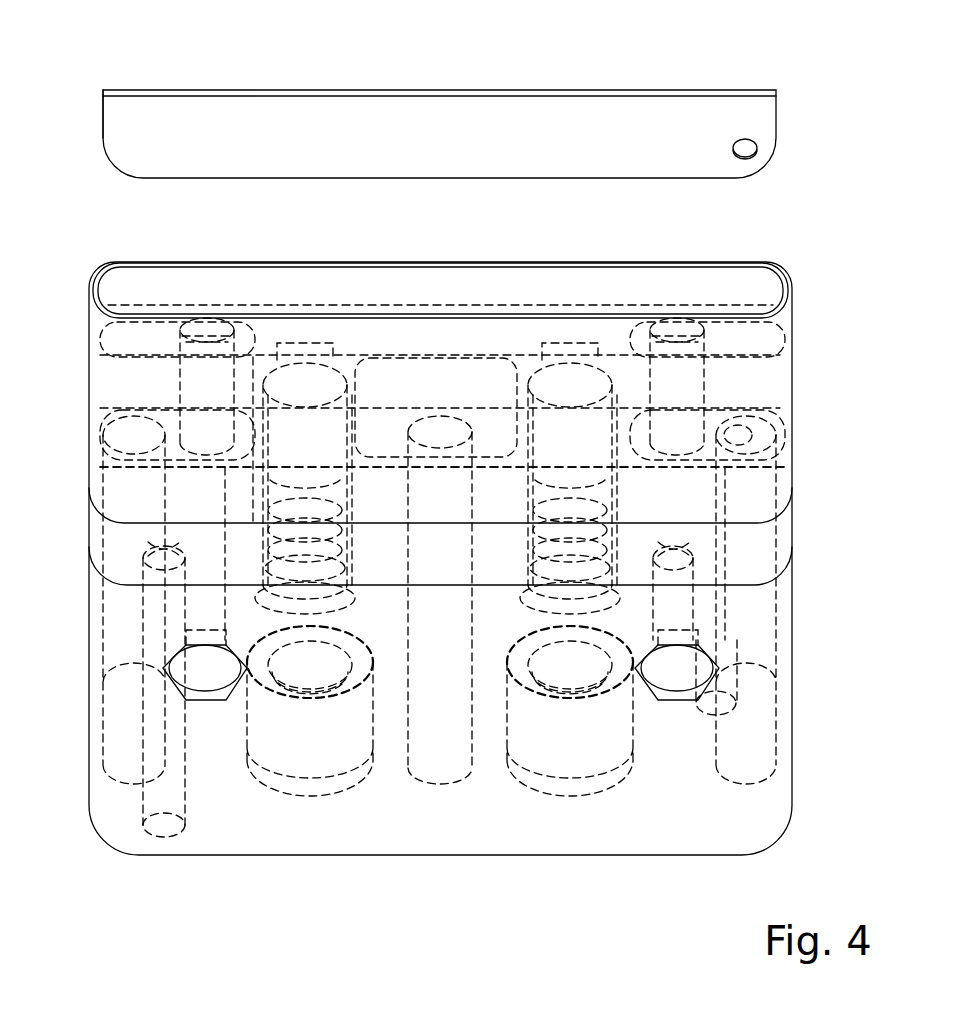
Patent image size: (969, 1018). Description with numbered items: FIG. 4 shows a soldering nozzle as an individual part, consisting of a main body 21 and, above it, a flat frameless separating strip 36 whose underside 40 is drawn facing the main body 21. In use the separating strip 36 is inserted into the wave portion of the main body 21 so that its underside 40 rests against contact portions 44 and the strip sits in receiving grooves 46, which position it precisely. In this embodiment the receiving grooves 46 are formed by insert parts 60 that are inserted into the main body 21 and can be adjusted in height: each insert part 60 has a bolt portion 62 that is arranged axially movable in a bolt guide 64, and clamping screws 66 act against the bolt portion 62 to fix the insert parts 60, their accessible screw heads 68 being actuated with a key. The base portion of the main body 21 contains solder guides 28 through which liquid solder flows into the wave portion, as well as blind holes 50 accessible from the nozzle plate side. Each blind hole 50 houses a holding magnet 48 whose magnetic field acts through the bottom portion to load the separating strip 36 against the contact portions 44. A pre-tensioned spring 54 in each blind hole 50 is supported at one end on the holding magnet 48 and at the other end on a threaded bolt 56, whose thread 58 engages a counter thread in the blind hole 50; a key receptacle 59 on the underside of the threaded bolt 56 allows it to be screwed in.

The main body 21 is at (795, 613).
The solder guides 28 is at (110, 720).
The separating strip 36 is at (652, 112).
The underside 40 is at (285, 178).
The blind holes 50 is at (462, 93).
The contact portions 44 is at (553, 375).
The receiving grooves 46 is at (208, 330).
The holding magnets 48 is at (580, 435).
The pre-tensioned spring 54 is at (545, 535).
The threaded bolt 56 is at (540, 570).
The thread 58 is at (567, 630).
The key receptacle 59 is at (314, 757).
The insert parts 60 is at (200, 385).
The bolt portion 62 is at (200, 505).
The bolt guide 64 is at (200, 473).
The clamping screws 66 is at (200, 605).
The screw heads 68 is at (208, 690).